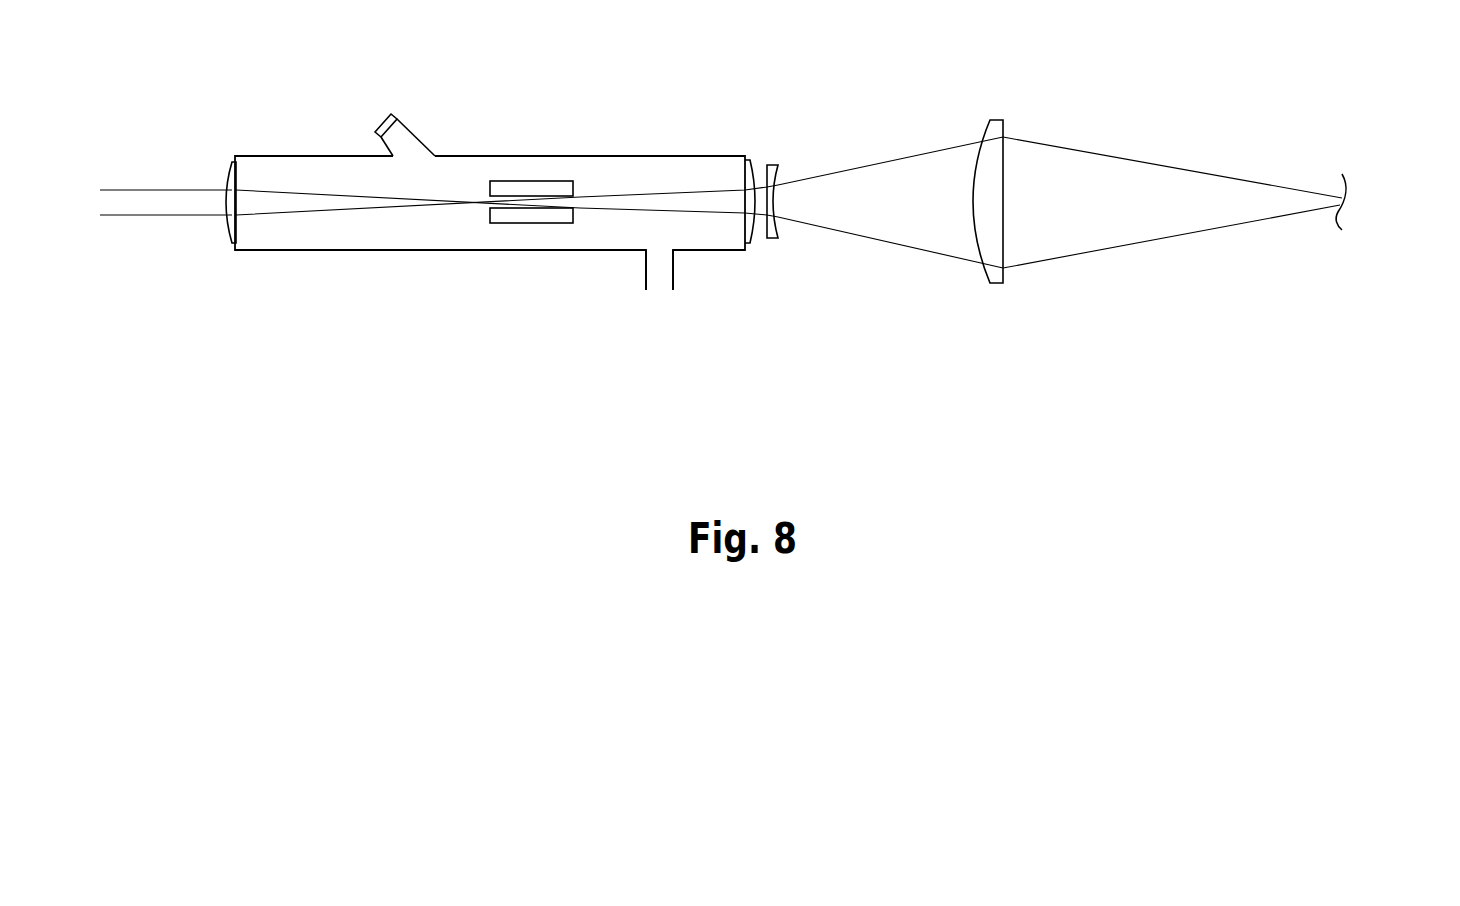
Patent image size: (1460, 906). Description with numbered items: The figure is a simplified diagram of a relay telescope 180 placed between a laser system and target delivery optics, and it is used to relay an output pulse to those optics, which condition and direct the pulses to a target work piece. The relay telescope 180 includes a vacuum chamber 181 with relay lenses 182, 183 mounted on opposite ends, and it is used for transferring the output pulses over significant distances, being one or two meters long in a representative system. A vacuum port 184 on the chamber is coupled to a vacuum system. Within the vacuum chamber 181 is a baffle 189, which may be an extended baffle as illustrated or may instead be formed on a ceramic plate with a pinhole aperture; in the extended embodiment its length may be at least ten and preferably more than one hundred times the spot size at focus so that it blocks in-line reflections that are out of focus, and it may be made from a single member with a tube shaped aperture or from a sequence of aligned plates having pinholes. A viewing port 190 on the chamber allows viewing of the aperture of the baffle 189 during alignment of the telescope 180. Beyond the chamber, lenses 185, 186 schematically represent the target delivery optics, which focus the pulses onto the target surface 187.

The relay telescope 180 is at (586, 154).
The vacuum chamber 181 is at (298, 250).
The relay lens 182 is at (228, 232).
The relay lens 183 is at (753, 238).
The vacuum port 184 is at (658, 266).
The lens 185 is at (778, 167).
The lens 186 is at (998, 120).
The target surface 187 is at (1348, 187).
The baffle 189 is at (522, 217).
The viewing port 190 is at (387, 115).